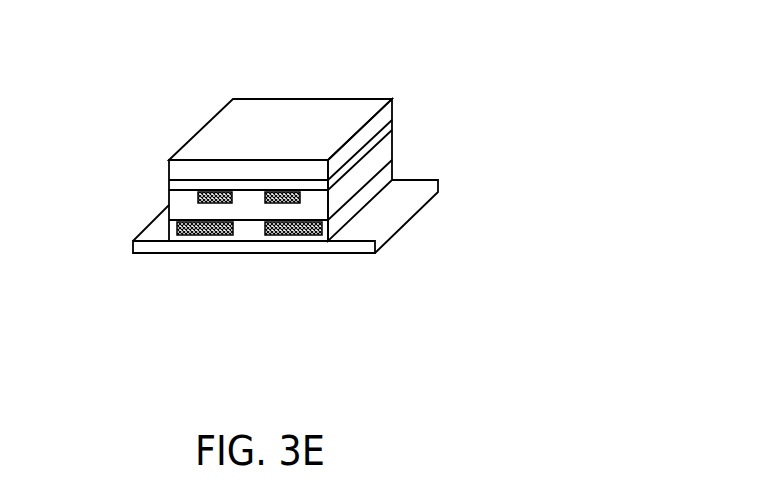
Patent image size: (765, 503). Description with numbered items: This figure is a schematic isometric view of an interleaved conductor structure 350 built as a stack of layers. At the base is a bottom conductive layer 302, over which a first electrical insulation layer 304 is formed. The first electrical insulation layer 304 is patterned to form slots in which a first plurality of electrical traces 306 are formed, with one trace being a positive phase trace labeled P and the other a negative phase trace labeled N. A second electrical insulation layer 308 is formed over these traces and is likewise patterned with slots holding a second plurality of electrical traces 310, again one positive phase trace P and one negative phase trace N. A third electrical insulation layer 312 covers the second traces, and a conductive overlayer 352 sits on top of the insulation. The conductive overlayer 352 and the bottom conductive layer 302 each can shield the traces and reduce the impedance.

The bottom conductive layer 302 is at (142, 248).
The first electrical insulation layer 304 is at (372, 192).
The first plurality of electrical traces 306 is at (189, 235).
The second electrical insulation layer 308 is at (242, 213).
The second plurality of electrical traces 310 is at (372, 62).
The third electrical insulation layer 312 is at (169, 170).
The interleaved conductor structure 350 is at (137, 179).
The conductive overlayer 352 is at (284, 112).